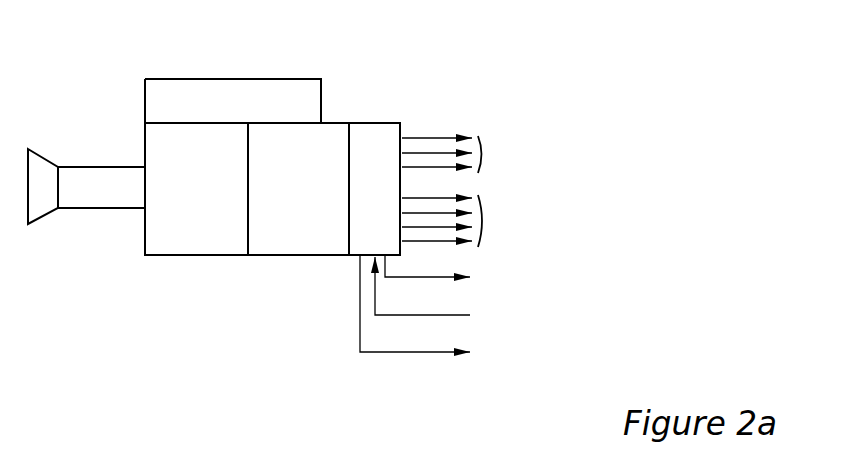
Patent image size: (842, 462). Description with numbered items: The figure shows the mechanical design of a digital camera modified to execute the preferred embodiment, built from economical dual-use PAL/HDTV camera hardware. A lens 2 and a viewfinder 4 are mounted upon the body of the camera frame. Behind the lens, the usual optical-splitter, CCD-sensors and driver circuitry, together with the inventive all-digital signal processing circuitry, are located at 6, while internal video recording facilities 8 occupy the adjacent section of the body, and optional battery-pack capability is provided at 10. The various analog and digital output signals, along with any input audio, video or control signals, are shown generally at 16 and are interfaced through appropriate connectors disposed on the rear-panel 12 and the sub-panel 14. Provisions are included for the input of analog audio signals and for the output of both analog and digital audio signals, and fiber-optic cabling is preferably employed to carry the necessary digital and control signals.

The lens 2 is at (103, 165).
The viewfinder 4 is at (237, 78).
The optical-splitter, CCD-sensors, driver circuitry and all-digital signal processin 6 is at (208, 257).
The internal video recording facilities 8 is at (297, 257).
The battery-pack 10 is at (365, 122).
The rear-panel 12 is at (402, 130).
The sub-panel 14 is at (353, 257).
The analog and digital output signals and input signals 16 is at (719, 104).